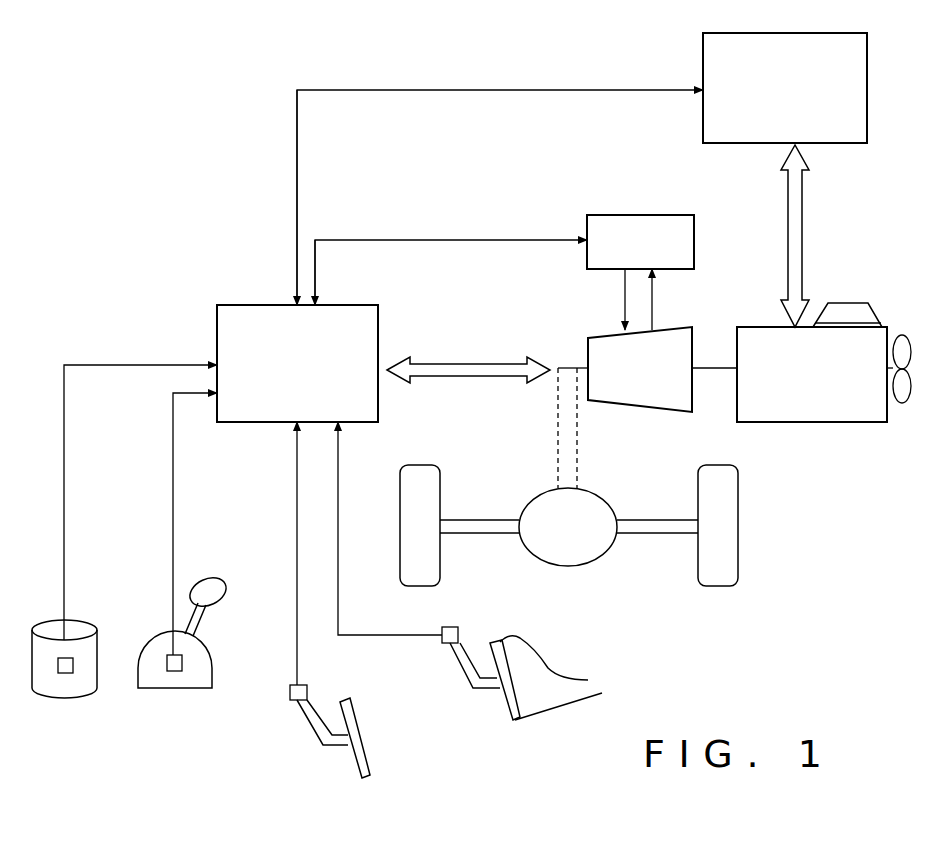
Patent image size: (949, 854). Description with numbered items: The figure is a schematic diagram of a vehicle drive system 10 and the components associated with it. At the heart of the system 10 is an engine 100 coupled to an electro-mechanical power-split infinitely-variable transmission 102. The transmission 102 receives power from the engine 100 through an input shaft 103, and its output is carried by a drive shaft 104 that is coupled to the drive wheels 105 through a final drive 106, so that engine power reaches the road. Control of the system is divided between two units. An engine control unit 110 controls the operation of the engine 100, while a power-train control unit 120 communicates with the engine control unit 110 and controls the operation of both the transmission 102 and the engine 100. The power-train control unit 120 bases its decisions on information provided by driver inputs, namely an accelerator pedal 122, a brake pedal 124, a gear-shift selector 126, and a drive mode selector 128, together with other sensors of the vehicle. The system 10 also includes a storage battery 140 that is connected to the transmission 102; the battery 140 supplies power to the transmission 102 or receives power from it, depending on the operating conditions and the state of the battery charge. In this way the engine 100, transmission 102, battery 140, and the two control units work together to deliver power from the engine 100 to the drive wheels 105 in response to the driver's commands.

The vehicle drive system 10 is at (848, 527).
The engine 100 is at (870, 342).
The electro-mechanical power-split infinitely-variable transmission 102 is at (683, 330).
The input shaft 103 is at (718, 370).
The drive shaft 104 is at (565, 365).
The drive wheels 105 is at (440, 583).
The final drive 106 is at (595, 513).
The engine control unit 110 is at (852, 99).
The power-train control unit 120 is at (238, 318).
The accelerator pedal 122 is at (516, 722).
The brake pedal 124 is at (366, 756).
The gear-shift selector 126 is at (182, 690).
The drive mode selector 128 is at (58, 698).
The storage battery 140 is at (657, 218).